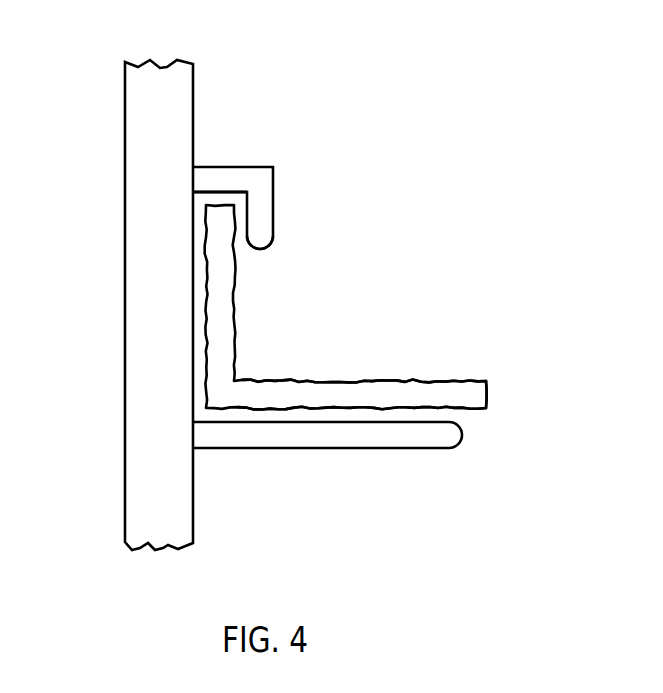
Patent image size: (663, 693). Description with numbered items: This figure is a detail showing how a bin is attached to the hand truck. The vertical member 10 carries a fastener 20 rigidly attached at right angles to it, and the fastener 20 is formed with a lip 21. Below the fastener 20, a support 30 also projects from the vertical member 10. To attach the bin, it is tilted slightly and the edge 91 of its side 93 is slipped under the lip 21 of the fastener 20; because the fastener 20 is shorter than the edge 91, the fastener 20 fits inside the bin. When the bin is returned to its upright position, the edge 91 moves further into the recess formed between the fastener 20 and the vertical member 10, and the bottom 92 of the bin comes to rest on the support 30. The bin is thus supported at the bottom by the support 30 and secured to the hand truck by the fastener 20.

The vertical member 10 is at (112, 275).
The fastener 20 is at (286, 195).
The lip 21 is at (266, 262).
The support 30 is at (342, 460).
The edge 91 is at (229, 181).
The bottom 92 is at (413, 367).
The side 93 is at (249, 339).